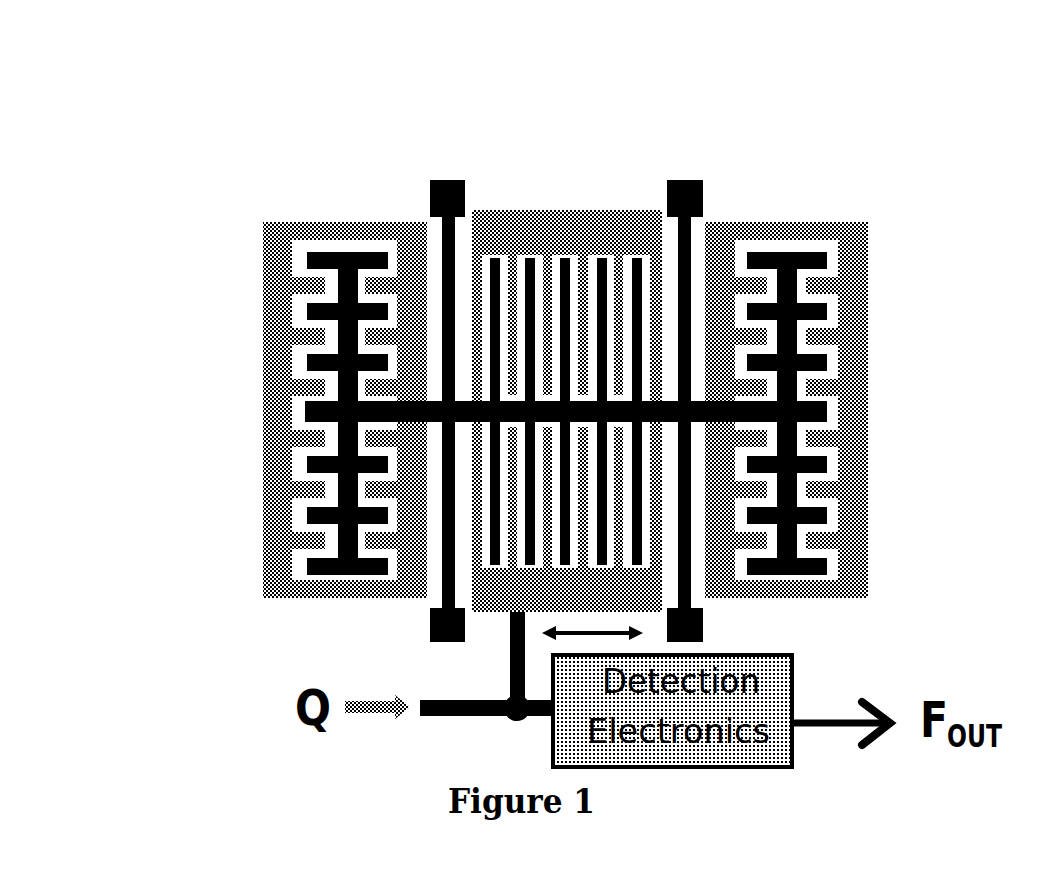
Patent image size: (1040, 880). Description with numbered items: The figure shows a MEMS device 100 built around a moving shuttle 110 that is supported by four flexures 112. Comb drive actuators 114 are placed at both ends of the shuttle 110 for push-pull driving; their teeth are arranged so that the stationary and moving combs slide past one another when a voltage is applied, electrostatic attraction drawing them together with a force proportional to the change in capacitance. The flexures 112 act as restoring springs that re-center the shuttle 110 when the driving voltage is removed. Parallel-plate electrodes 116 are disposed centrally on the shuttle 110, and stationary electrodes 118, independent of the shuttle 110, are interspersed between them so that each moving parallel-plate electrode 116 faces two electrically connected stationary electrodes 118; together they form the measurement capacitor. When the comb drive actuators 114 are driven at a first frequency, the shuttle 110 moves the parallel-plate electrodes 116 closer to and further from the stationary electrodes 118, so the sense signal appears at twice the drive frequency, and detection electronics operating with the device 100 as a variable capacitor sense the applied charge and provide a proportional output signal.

The MEMS device 100 is at (302, 94).
The moving shuttle 110 is at (340, 412).
The flexures 112 is at (445, 197).
The comb drive actuators 114 is at (860, 267).
The parallel-plate electrodes 116 is at (530, 255).
The stationary electrodes 118 is at (585, 260).